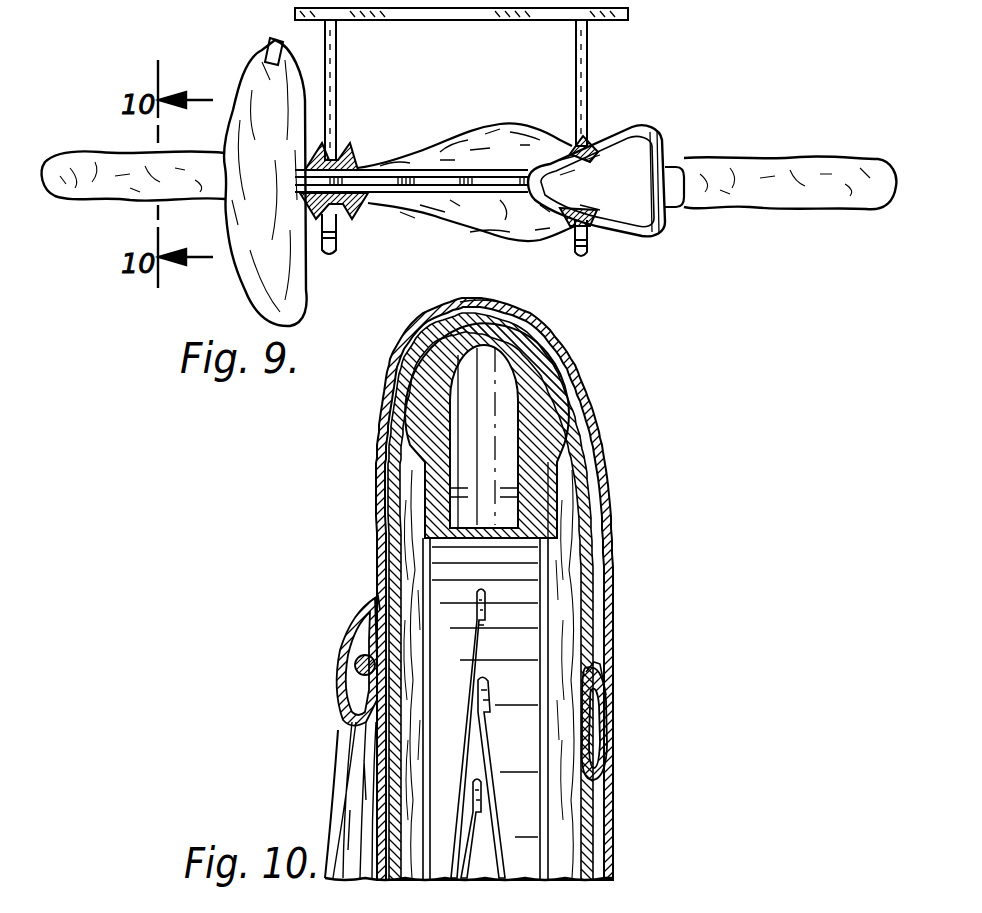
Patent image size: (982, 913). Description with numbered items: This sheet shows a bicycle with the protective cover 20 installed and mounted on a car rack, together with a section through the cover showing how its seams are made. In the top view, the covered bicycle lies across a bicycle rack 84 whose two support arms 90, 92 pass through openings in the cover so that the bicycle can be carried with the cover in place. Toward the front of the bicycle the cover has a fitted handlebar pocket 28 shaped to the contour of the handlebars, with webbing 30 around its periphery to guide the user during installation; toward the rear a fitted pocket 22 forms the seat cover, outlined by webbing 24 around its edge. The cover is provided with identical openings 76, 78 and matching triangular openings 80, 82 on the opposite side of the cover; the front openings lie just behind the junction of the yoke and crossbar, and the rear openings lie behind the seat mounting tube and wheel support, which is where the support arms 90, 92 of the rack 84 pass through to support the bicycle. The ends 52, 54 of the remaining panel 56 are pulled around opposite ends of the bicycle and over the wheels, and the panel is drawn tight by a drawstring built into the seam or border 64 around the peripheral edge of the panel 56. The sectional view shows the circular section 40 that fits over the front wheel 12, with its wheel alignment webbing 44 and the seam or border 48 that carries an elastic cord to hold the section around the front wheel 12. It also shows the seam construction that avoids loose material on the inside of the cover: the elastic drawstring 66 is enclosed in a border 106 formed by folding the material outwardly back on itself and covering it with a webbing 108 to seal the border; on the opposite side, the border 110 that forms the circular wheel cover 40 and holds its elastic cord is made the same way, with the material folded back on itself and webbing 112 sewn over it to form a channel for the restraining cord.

In FIG. 10, the front wheel 12 is at (552, 497).
In FIG. 9, the protective cover 20 is at (475, 242).
In FIG. 10, the protective cover 20 is at (636, 623).
In FIG. 9, the fitted pocket 22 is at (664, 138).
In FIG. 9, the webbing 24 is at (670, 226).
In FIG. 9, the fitted handlebar pocket 28 is at (252, 291).
In FIG. 9, the webbing 30 is at (266, 47).
In FIG. 10, the circular section 40 is at (596, 579).
In FIG. 10, the webbing 44 is at (544, 303).
In FIG. 10, the seam or border 48 is at (593, 733).
In FIG. 9, the end 52 is at (812, 165).
In FIG. 9, the end 54 is at (80, 160).
In FIG. 10, the remaining panel 56 is at (386, 514).
In FIG. 10, the seam or border 64 is at (312, 725).
In FIG. 10, the drawstring end 66 is at (353, 665).
In FIG. 9, the opening 76 is at (352, 146).
In FIG. 9, the opening 78 is at (590, 142).
In FIG. 9, the triangular opening 80 is at (348, 218).
In FIG. 9, the triangular opening 82 is at (598, 228).
In FIG. 9, the bicycle rack 84 is at (600, 83).
In FIG. 9, the support arm 90 is at (338, 55).
In FIG. 9, the support arm 92 is at (589, 55).
In FIG. 10, the border 106 is at (346, 642).
In FIG. 10, the webbing 108 is at (364, 611).
In FIG. 10, the border 110 is at (610, 722).
In FIG. 10, the webbing 112 is at (606, 699).